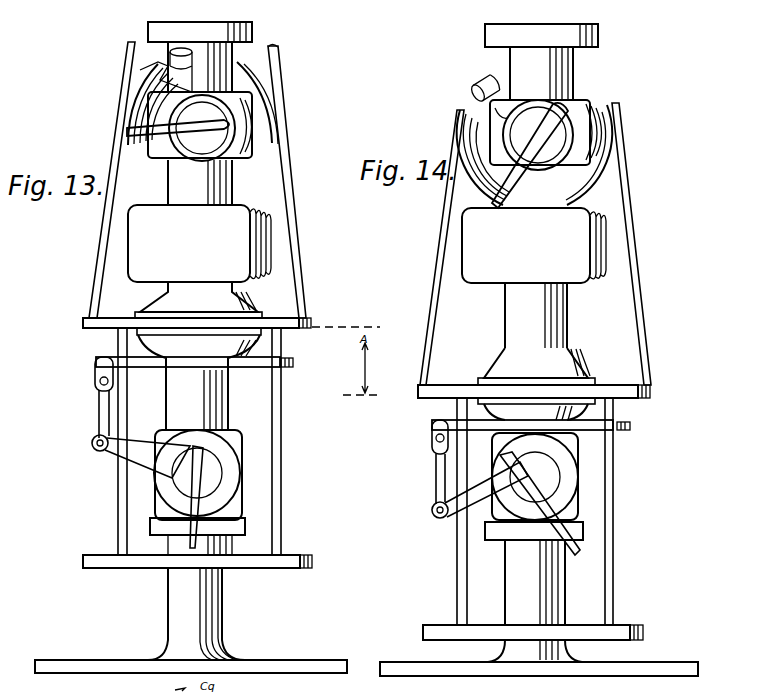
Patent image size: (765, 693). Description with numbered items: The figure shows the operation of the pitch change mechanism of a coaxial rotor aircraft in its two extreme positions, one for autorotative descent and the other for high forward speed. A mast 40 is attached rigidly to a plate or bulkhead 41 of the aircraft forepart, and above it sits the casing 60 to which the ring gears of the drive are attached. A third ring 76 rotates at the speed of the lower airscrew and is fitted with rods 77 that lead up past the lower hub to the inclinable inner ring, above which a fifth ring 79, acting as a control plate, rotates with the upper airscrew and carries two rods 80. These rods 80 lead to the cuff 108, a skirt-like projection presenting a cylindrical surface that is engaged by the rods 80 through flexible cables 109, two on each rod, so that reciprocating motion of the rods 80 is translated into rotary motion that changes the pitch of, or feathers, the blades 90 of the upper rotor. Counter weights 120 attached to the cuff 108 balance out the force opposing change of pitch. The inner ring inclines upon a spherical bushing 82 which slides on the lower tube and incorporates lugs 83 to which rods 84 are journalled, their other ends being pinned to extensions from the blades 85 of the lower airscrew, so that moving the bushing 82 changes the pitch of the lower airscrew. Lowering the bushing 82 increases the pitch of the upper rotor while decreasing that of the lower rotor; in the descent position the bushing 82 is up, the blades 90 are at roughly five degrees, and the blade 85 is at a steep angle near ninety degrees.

In FIG. 13, the counter weights 120 is at (172, 55).
In FIG. 13, the flexible cables 109 is at (145, 72).
In FIG. 13, the cuff 108 is at (138, 118).
In FIG. 13, the blades of the upper rotor 90 is at (222, 125).
In FIG. 14, the blades of the upper rotor 90 is at (570, 115).
In FIG. 13, the rods 80 is at (290, 146).
In FIG. 14, the rods 80 is at (628, 156).
In FIG. 13, the casing 60 is at (268, 226).
In FIG. 14, the casing 60 is at (620, 231).
In FIG. 13, the spherical bushing 82 is at (246, 300).
In FIG. 14, the spherical bushing 82 is at (583, 362).
In FIG. 13, the fifth ring 79 is at (315, 321).
In FIG. 14, the fifth ring 79 is at (652, 394).
In FIG. 13, the lugs 83 is at (92, 365).
In FIG. 13, the rods 84 is at (92, 412).
In FIG. 13, the rods 77 is at (282, 396).
In FIG. 14, the rods 77 is at (614, 469).
In FIG. 13, the blades of the lower airscrew 85 is at (208, 470).
In FIG. 14, the blades of the lower airscrew 85 is at (555, 490).
In FIG. 13, the third ring 76 is at (305, 556).
In FIG. 14, the third ring 76 is at (645, 633).
In FIG. 13, the mast 40 is at (225, 608).
In FIG. 14, the mast 40 is at (565, 582).
In FIG. 13, the plate or bulkhead 41 is at (290, 660).
In FIG. 14, the plate or bulkhead 41 is at (690, 662).